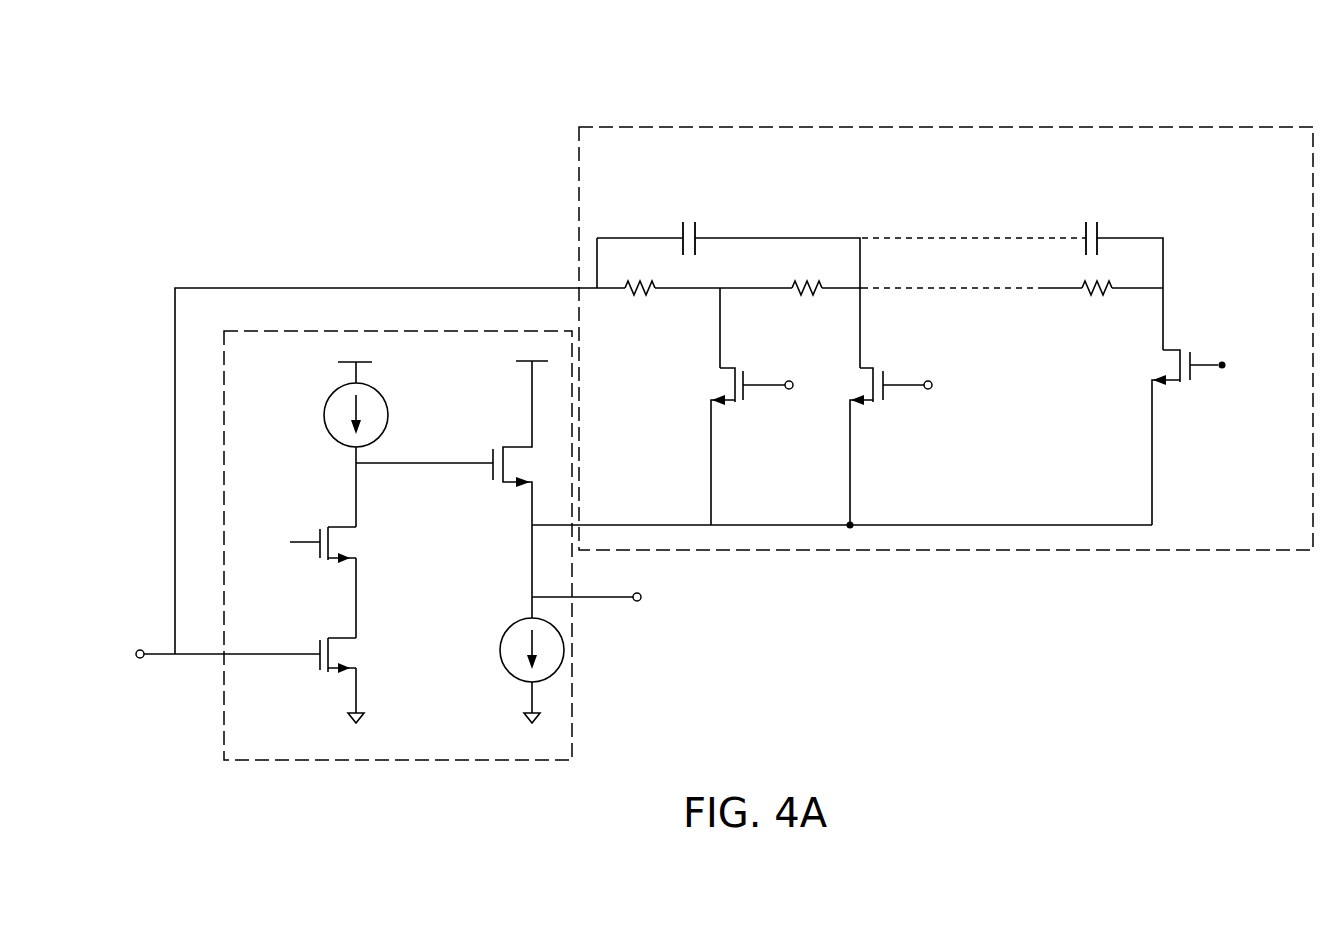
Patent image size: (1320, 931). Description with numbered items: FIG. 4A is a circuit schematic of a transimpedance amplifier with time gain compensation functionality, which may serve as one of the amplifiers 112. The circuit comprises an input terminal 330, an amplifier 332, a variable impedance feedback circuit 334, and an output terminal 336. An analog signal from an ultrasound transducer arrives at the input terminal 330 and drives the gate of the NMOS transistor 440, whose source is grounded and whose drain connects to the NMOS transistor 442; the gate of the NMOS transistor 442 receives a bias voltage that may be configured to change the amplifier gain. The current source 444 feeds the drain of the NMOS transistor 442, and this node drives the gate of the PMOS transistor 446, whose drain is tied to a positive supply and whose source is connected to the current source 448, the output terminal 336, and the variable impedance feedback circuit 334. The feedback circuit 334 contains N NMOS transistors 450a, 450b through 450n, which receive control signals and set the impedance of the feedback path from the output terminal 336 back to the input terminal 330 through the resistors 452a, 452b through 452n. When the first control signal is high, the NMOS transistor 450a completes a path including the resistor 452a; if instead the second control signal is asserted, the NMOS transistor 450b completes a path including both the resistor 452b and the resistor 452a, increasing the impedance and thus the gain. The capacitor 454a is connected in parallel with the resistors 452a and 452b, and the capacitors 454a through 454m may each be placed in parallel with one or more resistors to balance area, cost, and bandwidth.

The amplifier 112 is at (226, 114).
The input terminal 330 is at (138, 648).
The amplifier 332 is at (262, 762).
The variable impedance feedback circuit 334 is at (1008, 552).
The output terminal 336 is at (638, 602).
The NMOS transistor 440 is at (354, 655).
The NMOS transistor 442 is at (354, 547).
The current source 444 is at (386, 406).
The PMOS transistor 446 is at (515, 446).
The current source 448 is at (503, 636).
The NMOS transistor 450a is at (723, 382).
The NMOS transistor 450b is at (853, 380).
The NMOS transistor 450n is at (1163, 362).
The resistor 452a is at (648, 298).
The resistor 452b is at (815, 298).
The resistor 452n is at (1105, 298).
The capacitor 454a is at (700, 232).
The capacitor 454m is at (1100, 231).